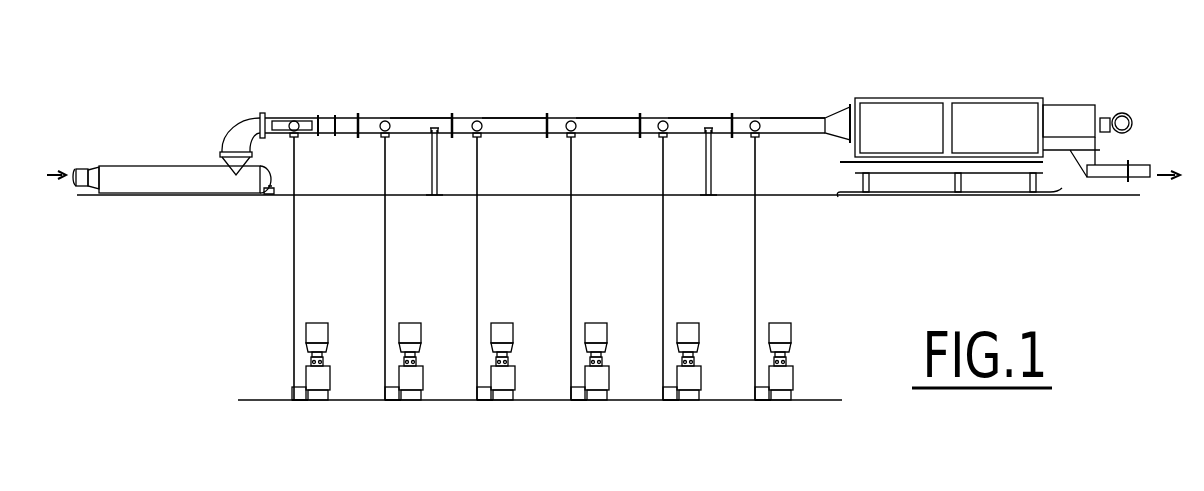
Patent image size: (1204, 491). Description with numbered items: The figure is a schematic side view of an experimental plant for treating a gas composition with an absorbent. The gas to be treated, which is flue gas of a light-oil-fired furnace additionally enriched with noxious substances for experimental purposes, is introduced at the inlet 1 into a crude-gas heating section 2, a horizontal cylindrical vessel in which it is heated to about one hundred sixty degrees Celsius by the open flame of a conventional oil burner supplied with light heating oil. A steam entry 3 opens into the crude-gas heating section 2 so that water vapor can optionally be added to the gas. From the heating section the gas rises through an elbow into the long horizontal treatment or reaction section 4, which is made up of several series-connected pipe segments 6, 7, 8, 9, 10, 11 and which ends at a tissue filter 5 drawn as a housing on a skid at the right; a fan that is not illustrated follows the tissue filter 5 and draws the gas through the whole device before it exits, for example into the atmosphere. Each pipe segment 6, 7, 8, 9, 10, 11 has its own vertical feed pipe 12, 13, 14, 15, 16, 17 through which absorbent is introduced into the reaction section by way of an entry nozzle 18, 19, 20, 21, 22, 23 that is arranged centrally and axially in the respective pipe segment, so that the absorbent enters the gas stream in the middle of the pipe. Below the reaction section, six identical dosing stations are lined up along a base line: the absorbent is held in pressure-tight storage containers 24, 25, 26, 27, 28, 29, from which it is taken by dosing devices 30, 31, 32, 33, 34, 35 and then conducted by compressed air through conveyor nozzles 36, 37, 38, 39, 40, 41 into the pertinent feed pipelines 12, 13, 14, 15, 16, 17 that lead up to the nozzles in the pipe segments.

The gas introduction point 1 is at (76, 153).
The crude-gas heating section 2 is at (173, 175).
The steam entry 3 is at (270, 197).
The treatment section 4 is at (348, 103).
The tissue filter 5 is at (1014, 89).
The pipe segment 6 is at (342, 134).
The pipe segment 7 is at (403, 134).
The pipe segment 8 is at (503, 134).
The pipe segment 9 is at (603, 134).
The pipe segment 10 is at (682, 134).
The pipe segment 11 is at (777, 134).
The feed pipe 12 is at (295, 254).
The feed pipe 13 is at (386, 254).
The feed pipe 14 is at (478, 245).
The feed pipe 15 is at (572, 248).
The feed pipe 16 is at (664, 243).
The feed pipe 17 is at (756, 234).
The entry nozzle 18 is at (294, 121).
The entry nozzle 19 is at (385, 121).
The entry nozzle 20 is at (477, 121).
The entry nozzle 21 is at (571, 121).
The entry nozzle 22 is at (663, 121).
The entry nozzle 23 is at (755, 121).
The pressure-tight storage container 24 is at (328, 333).
The pressure-tight storage container 25 is at (421, 333).
The pressure-tight storage container 26 is at (513, 333).
The pressure-tight storage container 27 is at (607, 333).
The pressure-tight storage container 28 is at (699, 333).
The pressure-tight storage container 29 is at (791, 333).
The dosing device 30 is at (330, 380).
The dosing device 31 is at (423, 380).
The dosing device 32 is at (515, 380).
The dosing device 33 is at (609, 380).
The dosing device 34 is at (701, 380).
The dosing device 35 is at (793, 380).
The conveyor nozzle 36 is at (287, 394).
The conveyor nozzle 37 is at (380, 390).
The conveyor nozzle 38 is at (472, 390).
The conveyor nozzle 39 is at (567, 390).
The conveyor nozzle 40 is at (660, 390).
The conveyor nozzle 41 is at (750, 390).